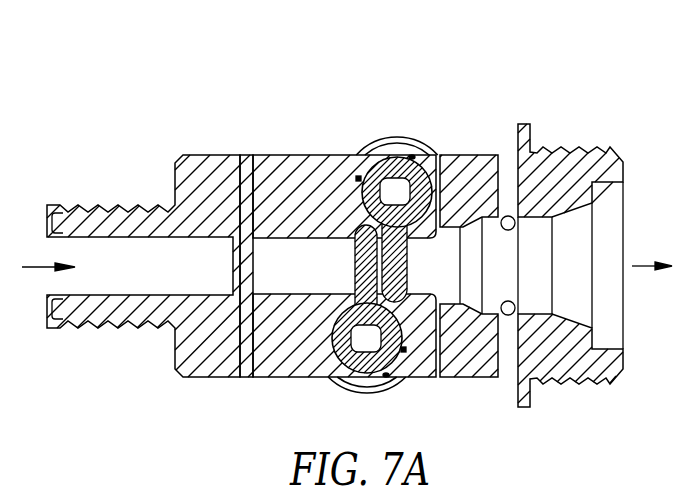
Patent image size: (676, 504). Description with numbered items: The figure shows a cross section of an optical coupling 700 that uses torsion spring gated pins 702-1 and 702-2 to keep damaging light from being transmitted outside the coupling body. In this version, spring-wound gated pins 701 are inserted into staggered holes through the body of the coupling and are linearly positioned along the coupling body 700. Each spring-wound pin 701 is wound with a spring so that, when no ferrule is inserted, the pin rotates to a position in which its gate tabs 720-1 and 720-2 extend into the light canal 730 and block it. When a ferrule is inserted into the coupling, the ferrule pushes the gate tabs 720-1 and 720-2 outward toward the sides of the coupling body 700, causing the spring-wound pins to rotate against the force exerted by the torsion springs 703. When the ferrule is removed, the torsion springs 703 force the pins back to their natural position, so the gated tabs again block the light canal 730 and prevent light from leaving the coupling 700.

The coupling body 700 is at (612, 98).
The spring-wound pin 701 is at (397, 188).
The torsion spring gated pin 702-1 is at (427, 140).
The torsion spring gated pin 702-2 is at (392, 378).
The torsion spring 703 is at (357, 179).
The gate tab 720-1 is at (410, 252).
The gate tab 720-2 is at (357, 259).
The light canal 730 is at (253, 277).